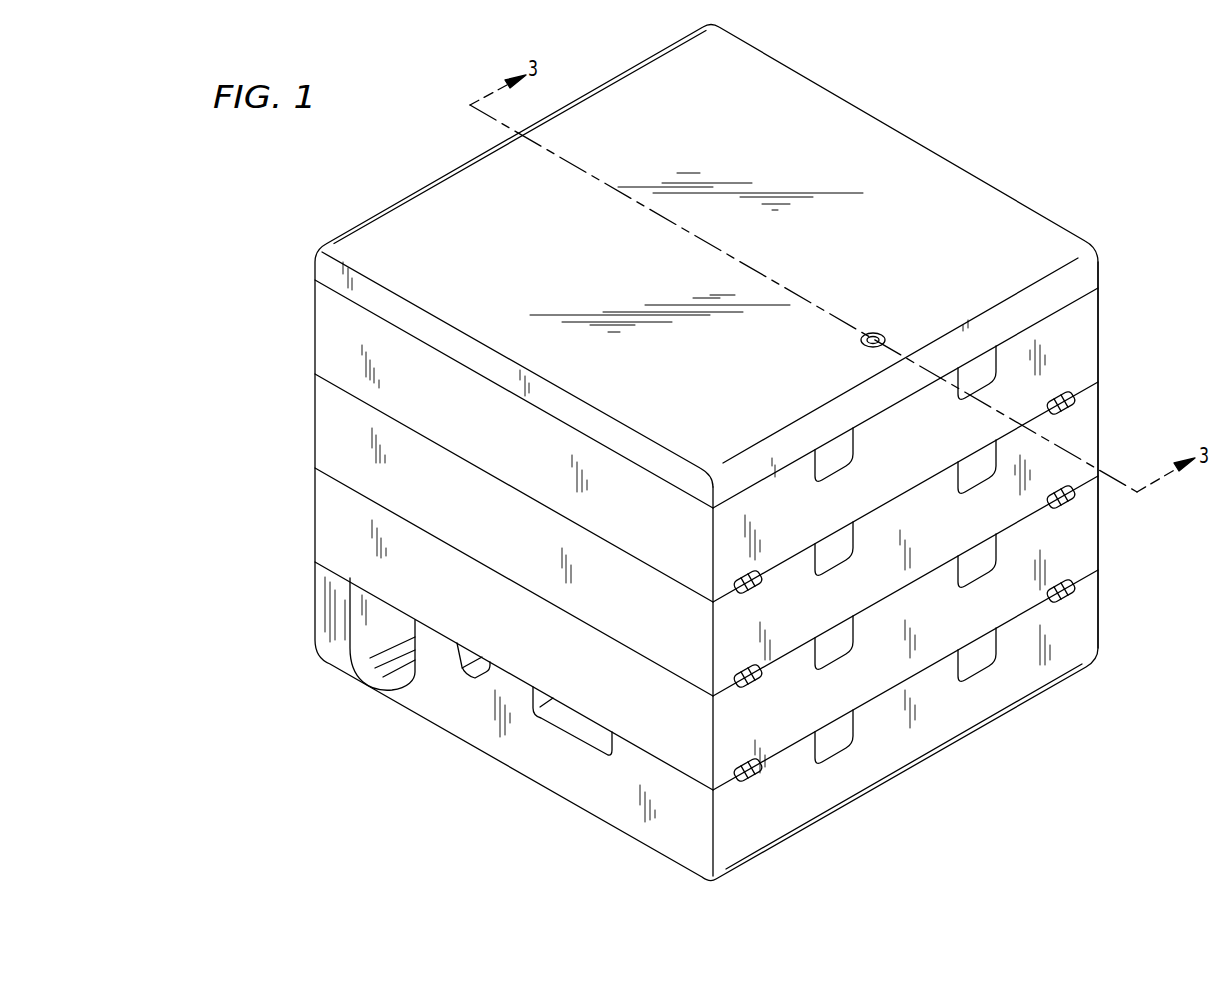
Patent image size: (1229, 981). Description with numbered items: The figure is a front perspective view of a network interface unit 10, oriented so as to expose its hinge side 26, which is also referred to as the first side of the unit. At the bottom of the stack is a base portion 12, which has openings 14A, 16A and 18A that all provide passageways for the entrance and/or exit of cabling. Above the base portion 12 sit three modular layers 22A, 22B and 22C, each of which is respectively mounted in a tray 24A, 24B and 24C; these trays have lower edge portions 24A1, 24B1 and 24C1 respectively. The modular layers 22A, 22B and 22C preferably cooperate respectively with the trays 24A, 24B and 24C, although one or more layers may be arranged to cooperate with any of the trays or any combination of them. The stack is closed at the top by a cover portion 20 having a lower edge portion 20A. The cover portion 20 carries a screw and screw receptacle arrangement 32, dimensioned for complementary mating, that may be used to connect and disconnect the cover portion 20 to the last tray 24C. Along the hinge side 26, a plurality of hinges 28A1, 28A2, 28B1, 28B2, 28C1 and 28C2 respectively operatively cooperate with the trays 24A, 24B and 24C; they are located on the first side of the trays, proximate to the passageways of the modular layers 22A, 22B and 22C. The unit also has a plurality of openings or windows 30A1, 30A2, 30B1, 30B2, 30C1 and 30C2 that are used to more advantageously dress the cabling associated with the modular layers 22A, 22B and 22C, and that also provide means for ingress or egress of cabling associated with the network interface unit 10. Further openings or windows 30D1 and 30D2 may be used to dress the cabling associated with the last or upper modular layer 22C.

The network interface unit 10 is at (1090, 184).
The base portion 12 is at (315, 607).
The opening 14A is at (413, 672).
The opening 16A is at (478, 665).
The opening 18A is at (568, 740).
The cover portion 20 is at (315, 265).
The lower edge portion 20A is at (458, 358).
The modular layer 22A is at (330, 526).
The modular layer 22B is at (330, 431).
The modular layer 22C is at (330, 336).
The tray 24A is at (315, 511).
The tray 24B is at (315, 416).
The tray 24C is at (315, 320).
The lower edge portion 24A1 is at (432, 630).
The lower edge portion 24B1 is at (432, 535).
The lower edge portion 24C1 is at (432, 440).
The hinge side 26 is at (1122, 320).
The hinge 28A1 is at (740, 770).
The hinge 28A2 is at (1060, 602).
The hinge 28B1 is at (740, 676).
The hinge 28B2 is at (1060, 508).
The hinge 28C1 is at (740, 582).
The hinge 28C2 is at (1060, 414).
The window 30A1 is at (842, 735).
The window 30A2 is at (965, 650).
The window 30B1 is at (842, 640).
The window 30B2 is at (965, 556).
The window 30C1 is at (842, 550).
The window 30C2 is at (965, 462).
The window 30D1 is at (832, 440).
The window 30D2 is at (972, 362).
The screw and screw receptacle arrangement 32 is at (880, 332).